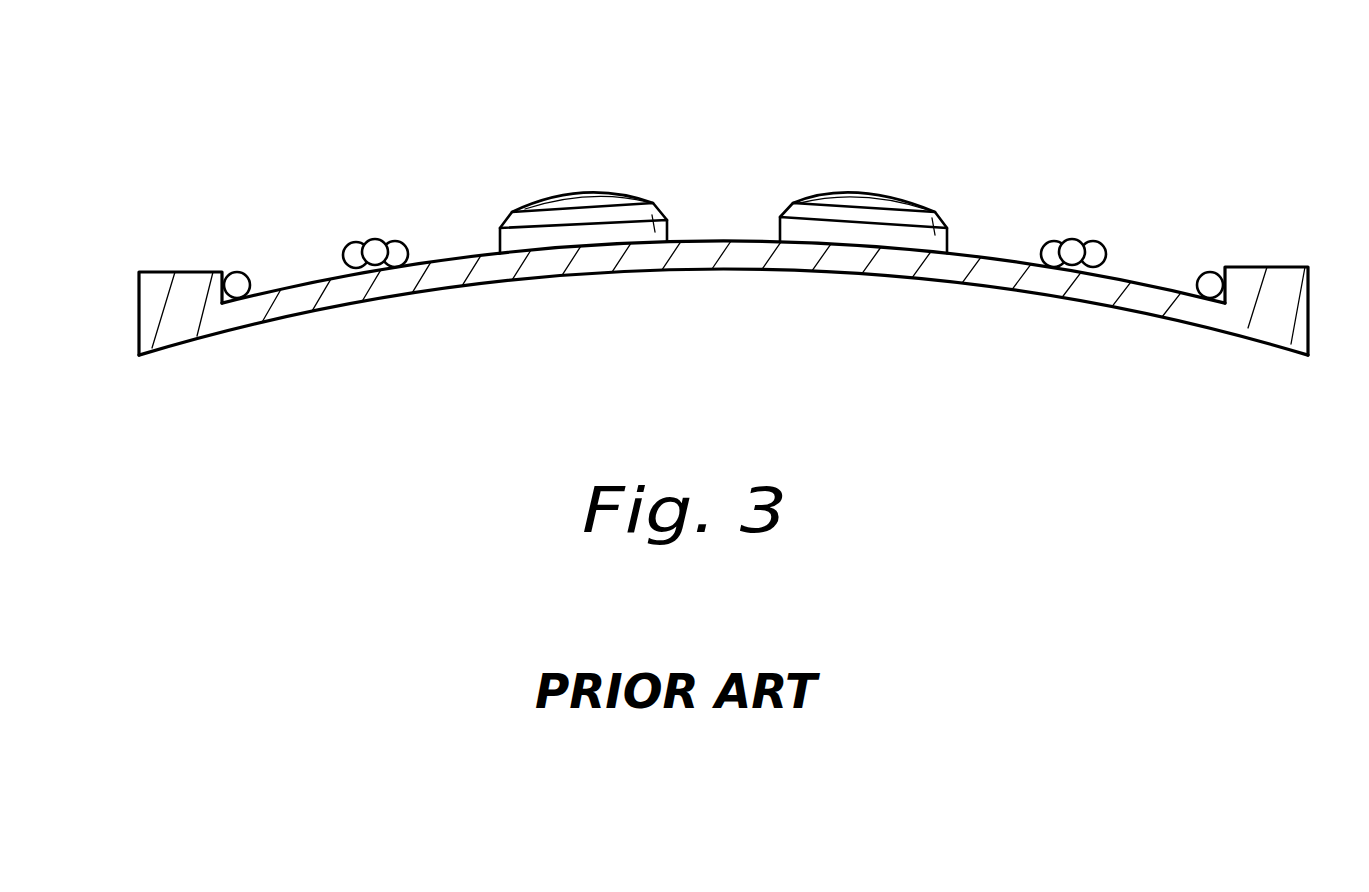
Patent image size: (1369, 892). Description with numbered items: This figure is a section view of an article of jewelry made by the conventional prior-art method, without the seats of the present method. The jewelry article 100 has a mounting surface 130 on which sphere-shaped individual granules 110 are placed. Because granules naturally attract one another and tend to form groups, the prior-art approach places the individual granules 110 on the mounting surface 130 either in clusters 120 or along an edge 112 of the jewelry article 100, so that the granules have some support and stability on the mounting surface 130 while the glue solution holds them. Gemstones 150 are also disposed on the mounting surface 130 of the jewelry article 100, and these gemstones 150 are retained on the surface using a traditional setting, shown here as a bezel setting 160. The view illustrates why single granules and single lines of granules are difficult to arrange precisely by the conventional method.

The jewelry article 100 is at (752, 293).
The individual granules 110 is at (1098, 242).
The edge 112 is at (153, 270).
The clusters 120 is at (376, 215).
The mounting surface 130 is at (293, 270).
The gemstones 150 is at (612, 197).
The bezel setting 160 is at (778, 230).